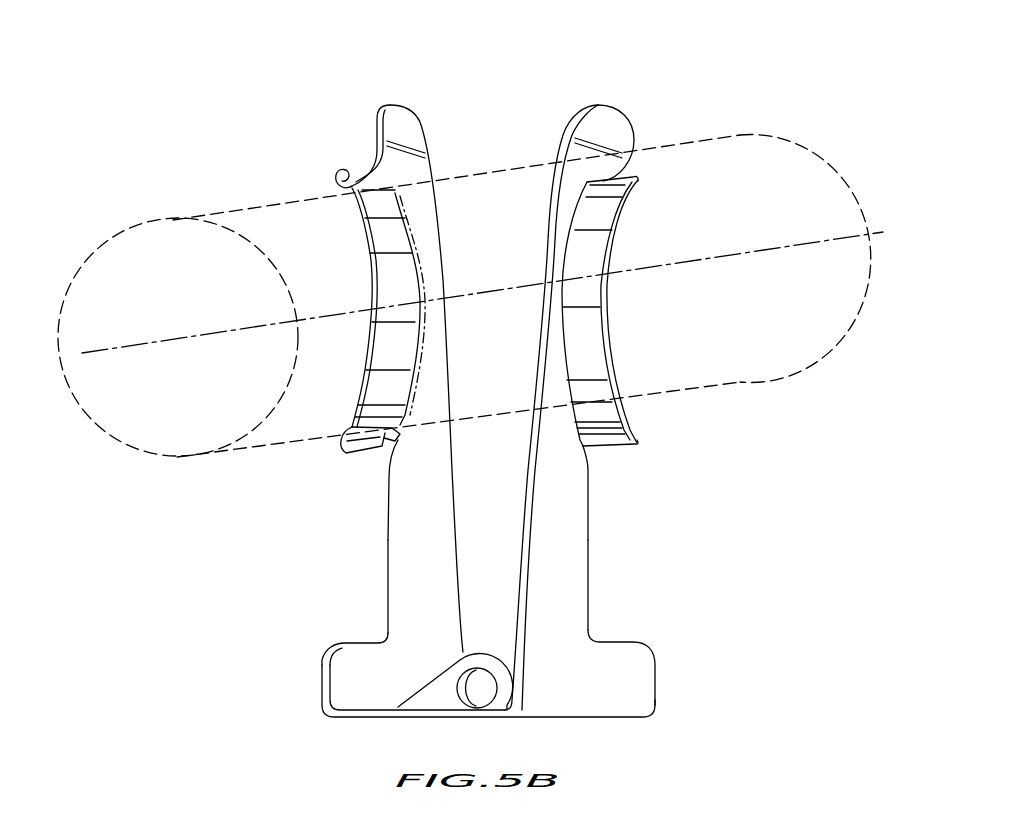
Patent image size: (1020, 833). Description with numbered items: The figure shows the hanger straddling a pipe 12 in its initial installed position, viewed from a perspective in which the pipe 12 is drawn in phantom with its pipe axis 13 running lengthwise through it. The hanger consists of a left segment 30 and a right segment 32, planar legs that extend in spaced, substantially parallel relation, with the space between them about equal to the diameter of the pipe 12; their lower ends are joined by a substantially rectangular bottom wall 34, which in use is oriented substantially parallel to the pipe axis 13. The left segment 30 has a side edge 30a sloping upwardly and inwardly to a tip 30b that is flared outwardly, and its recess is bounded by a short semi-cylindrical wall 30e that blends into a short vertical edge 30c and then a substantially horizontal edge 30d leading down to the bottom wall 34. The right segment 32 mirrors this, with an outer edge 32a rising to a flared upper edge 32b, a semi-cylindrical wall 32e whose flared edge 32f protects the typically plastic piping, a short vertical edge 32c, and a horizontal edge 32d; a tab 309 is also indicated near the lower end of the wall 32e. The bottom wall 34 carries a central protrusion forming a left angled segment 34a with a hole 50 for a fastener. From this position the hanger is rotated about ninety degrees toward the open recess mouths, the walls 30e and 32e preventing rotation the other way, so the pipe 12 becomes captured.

The pipe 12 is at (112, 236).
The pipe axis 13 is at (138, 341).
The left segment 30 is at (559, 100).
The side edge 30a is at (575, 502).
The tip 30b is at (596, 105).
The short vertical edge 30c is at (590, 585).
The substantially horizontal edge 30d is at (633, 641).
The semi-cylindrical wall 30e is at (602, 408).
The right segment 32 is at (446, 116).
The outer edge 32a is at (400, 507).
The upper edge 32b is at (378, 130).
The short vertical edge 32c is at (387, 577).
The horizontal edge 32d is at (372, 643).
The semi-cylindrical wall 32e is at (360, 183).
The flared segment edge 32f is at (335, 177).
The first arm tab 309 is at (368, 450).
The bottom wall 34 is at (363, 713).
The left angled segment 34a is at (484, 658).
The hole 50 is at (483, 690).